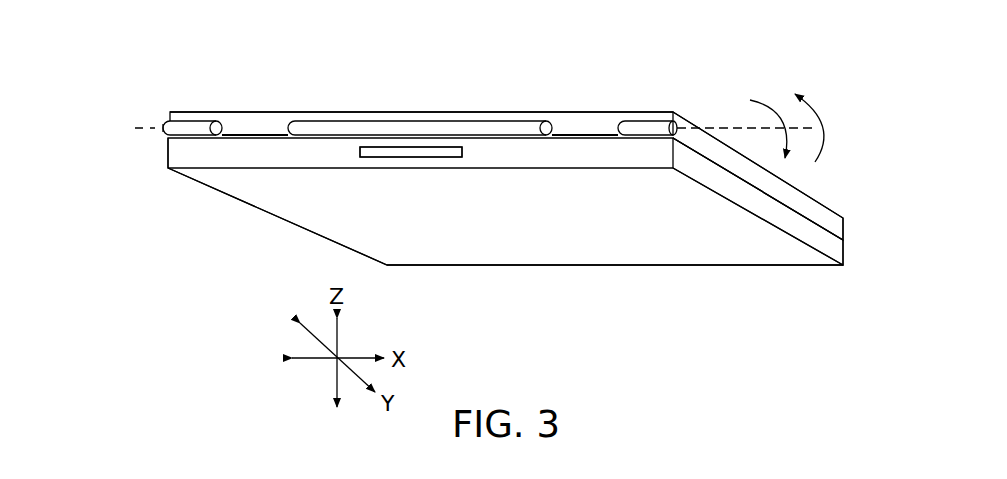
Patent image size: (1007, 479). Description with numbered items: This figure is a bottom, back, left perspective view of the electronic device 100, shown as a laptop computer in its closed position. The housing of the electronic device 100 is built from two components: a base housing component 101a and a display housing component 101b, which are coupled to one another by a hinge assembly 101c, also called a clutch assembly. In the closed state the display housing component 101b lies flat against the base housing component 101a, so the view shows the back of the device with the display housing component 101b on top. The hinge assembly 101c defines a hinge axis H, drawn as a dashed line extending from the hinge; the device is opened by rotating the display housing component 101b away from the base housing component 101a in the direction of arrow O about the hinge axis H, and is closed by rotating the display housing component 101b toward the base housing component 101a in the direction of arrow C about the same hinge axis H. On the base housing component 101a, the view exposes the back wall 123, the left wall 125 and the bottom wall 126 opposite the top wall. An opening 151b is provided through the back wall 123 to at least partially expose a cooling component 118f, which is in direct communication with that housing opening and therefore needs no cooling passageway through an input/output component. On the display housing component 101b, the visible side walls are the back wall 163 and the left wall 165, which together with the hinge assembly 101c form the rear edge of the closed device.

The electronic device 100 is at (558, 321).
The base housing component 101a is at (259, 217).
The display housing component 101b is at (196, 98).
The hinge assembly 101c is at (152, 136).
The back wall 123 is at (173, 148).
The left wall 125 is at (835, 249).
The bottom wall 126 is at (729, 258).
The opening 151b is at (377, 152).
The cooling component 118f is at (411, 152).
The back wall 163 is at (600, 118).
The left wall 165 is at (832, 228).
The hinge axis H is at (710, 128).
The arrow C is at (770, 100).
The arrow O is at (817, 98).